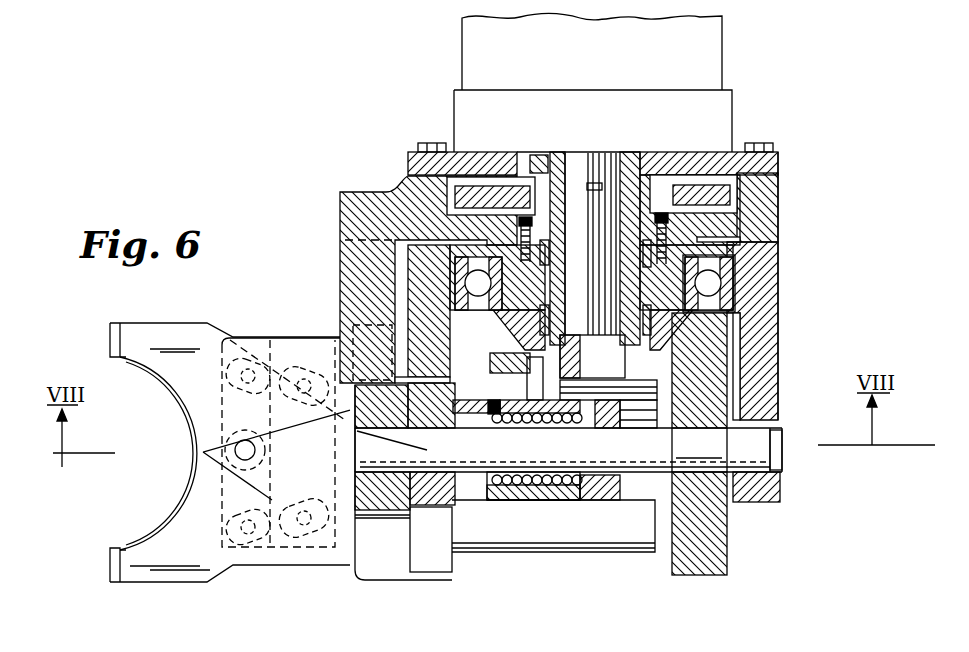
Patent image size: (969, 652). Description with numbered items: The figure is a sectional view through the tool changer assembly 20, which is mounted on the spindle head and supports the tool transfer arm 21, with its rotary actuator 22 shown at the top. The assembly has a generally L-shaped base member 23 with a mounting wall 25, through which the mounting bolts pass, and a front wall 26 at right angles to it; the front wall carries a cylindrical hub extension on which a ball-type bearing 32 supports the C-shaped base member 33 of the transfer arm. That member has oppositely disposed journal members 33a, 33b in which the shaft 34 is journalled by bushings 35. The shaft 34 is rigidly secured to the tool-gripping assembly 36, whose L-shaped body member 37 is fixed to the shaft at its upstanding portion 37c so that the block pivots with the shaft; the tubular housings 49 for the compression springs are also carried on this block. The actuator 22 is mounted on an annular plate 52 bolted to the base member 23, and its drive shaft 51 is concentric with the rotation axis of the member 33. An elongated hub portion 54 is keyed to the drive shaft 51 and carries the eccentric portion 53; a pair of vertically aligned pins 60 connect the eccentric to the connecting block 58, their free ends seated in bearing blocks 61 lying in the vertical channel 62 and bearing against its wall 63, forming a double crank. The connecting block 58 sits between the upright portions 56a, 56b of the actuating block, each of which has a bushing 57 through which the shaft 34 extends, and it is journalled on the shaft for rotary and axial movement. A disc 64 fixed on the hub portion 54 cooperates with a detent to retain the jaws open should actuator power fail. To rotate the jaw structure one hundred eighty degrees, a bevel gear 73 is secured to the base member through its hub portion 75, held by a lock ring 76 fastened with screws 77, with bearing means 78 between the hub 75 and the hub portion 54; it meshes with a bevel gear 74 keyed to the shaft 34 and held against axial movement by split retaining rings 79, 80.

The tool changer assembly 20 is at (793, 140).
The tool transfer arm 21 is at (590, 560).
The actuator 22 is at (716, 58).
The base member 23 is at (365, 186).
The mounting wall 25 is at (340, 272).
The front wall 26 is at (782, 208).
The bearing 32 is at (745, 300).
The base member of transfer arm 33 is at (781, 397).
The journal member 33a is at (762, 353).
The journal member 33b is at (430, 357).
The shaft 34 is at (537, 490).
The bushings 35 is at (350, 462).
The tool-gripping assembly 36 is at (340, 578).
The body member 37 is at (289, 332).
The upstanding portion 37c is at (276, 420).
The tubular housings 49 is at (475, 552).
The drive shaft 51 is at (588, 170).
The annularly-shaped plate 52 is at (462, 152).
The eccentric portion 53 is at (506, 423).
The elongated hub portion 54 is at (563, 153).
The vertically extending portion 56a is at (477, 497).
The vertically extending portion 56b is at (593, 492).
The bushings 57 is at (472, 400).
The connecting block 58 is at (522, 497).
The pins 60 is at (565, 350).
The bearing blocks 61 is at (552, 415).
The groove or channel 62 is at (498, 422).
The vertical wall 63 is at (617, 420).
The disc 64 is at (718, 182).
The bevel gear 73 is at (477, 317).
The bevel gear 74 is at (720, 533).
The hub portion 75 is at (561, 299).
The lock ring 76 is at (663, 212).
The screws 77 is at (534, 235).
The bearing means 78 is at (723, 297).
The split retaining ring 79 is at (675, 446).
The split retaining ring 80 is at (727, 443).